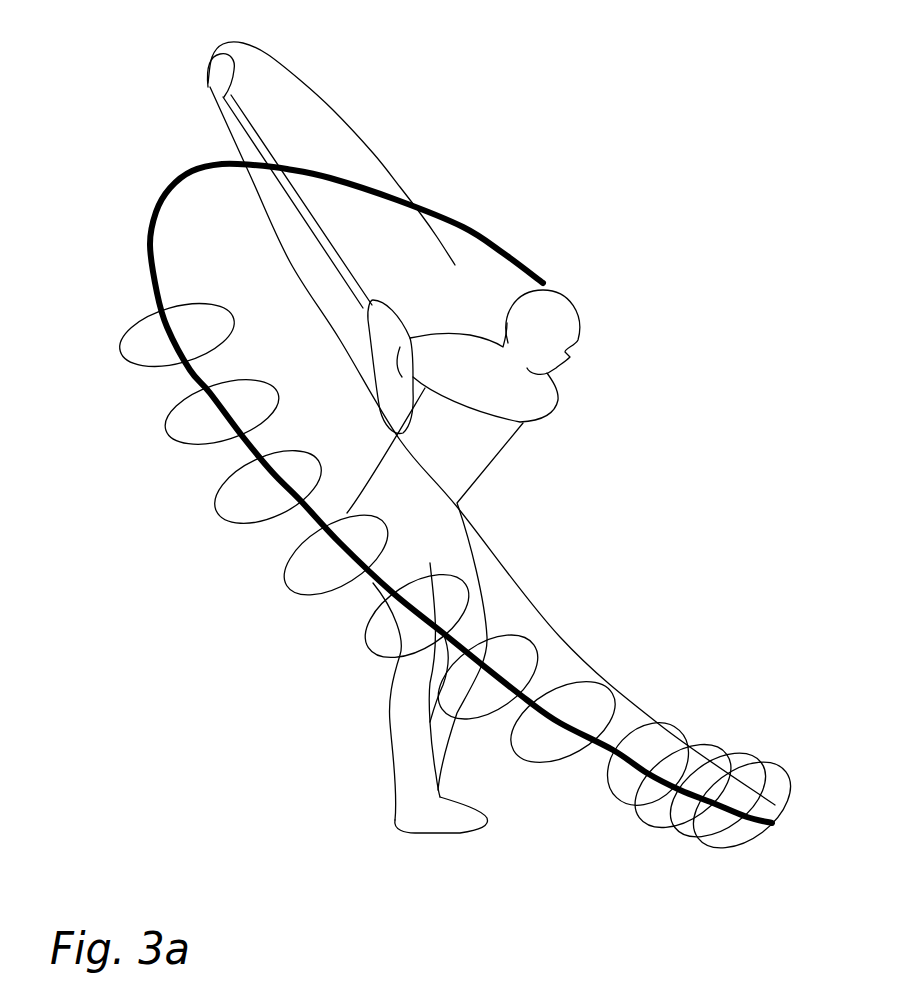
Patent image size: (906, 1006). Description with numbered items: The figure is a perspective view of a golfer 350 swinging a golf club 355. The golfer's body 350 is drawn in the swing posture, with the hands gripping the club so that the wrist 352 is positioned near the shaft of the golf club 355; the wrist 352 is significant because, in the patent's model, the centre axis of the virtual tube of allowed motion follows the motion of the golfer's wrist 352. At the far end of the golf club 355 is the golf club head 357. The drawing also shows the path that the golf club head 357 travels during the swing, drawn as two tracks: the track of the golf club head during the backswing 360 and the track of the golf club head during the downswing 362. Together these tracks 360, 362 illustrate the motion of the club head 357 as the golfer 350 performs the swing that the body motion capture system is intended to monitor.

The golfer's body 350 is at (480, 458).
The wrist 352 is at (410, 347).
The golf club 355 is at (317, 218).
The golf club head 357 is at (220, 72).
The track of golf club head (backswing) 360 is at (147, 250).
The track of golf club head (downswing) 362 is at (347, 110).